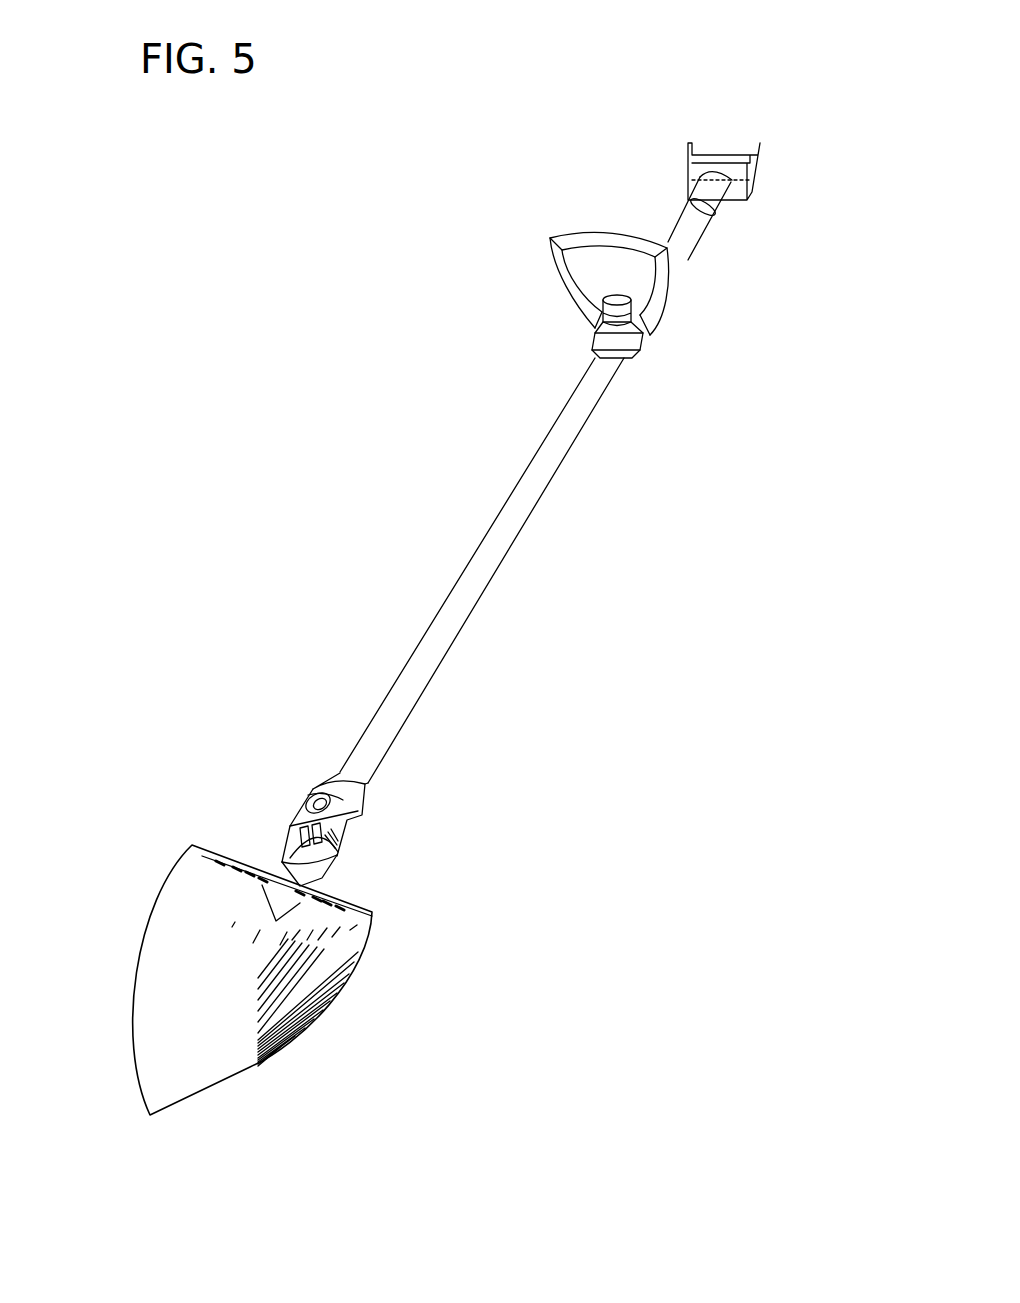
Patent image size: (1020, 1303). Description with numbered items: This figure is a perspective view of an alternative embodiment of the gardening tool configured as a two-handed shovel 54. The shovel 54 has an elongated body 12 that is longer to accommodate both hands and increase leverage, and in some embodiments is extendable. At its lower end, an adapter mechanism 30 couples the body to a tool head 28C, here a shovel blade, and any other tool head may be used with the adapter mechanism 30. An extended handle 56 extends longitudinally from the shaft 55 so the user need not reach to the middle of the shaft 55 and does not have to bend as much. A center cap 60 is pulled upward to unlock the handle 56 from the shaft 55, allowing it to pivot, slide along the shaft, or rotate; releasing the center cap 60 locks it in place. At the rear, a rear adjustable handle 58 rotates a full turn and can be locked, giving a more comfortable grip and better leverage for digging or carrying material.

The shovel 54 is at (343, 533).
The shaft 55 is at (397, 677).
The elongated body 12 is at (543, 465).
The extended handle 56 is at (613, 247).
The rear adjustable handle 58 is at (732, 168).
The center cap 60 is at (617, 298).
The adapter mechanism 30 is at (338, 873).
The tool head 28C is at (272, 1028).